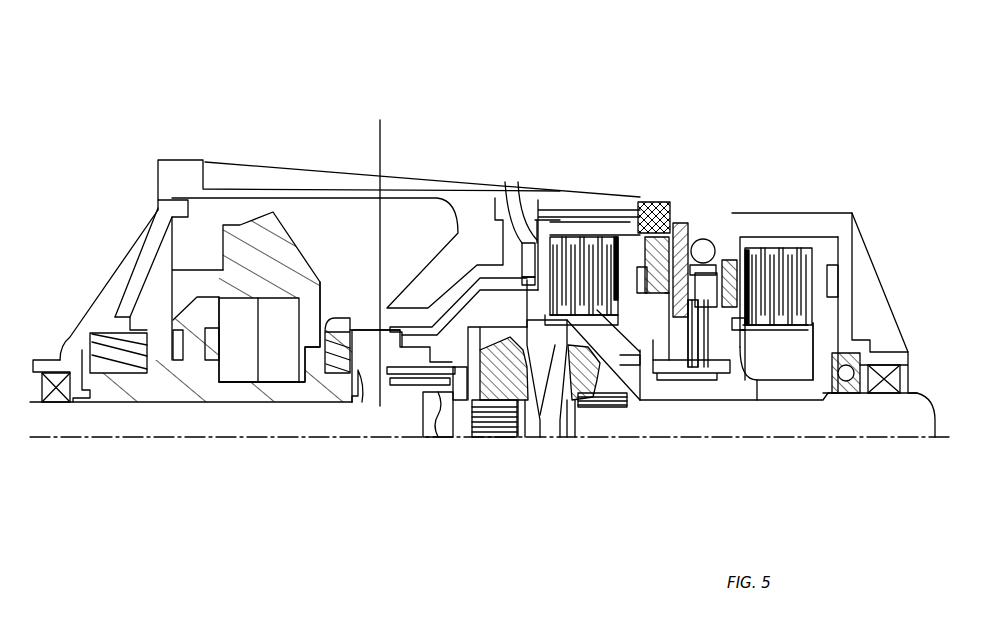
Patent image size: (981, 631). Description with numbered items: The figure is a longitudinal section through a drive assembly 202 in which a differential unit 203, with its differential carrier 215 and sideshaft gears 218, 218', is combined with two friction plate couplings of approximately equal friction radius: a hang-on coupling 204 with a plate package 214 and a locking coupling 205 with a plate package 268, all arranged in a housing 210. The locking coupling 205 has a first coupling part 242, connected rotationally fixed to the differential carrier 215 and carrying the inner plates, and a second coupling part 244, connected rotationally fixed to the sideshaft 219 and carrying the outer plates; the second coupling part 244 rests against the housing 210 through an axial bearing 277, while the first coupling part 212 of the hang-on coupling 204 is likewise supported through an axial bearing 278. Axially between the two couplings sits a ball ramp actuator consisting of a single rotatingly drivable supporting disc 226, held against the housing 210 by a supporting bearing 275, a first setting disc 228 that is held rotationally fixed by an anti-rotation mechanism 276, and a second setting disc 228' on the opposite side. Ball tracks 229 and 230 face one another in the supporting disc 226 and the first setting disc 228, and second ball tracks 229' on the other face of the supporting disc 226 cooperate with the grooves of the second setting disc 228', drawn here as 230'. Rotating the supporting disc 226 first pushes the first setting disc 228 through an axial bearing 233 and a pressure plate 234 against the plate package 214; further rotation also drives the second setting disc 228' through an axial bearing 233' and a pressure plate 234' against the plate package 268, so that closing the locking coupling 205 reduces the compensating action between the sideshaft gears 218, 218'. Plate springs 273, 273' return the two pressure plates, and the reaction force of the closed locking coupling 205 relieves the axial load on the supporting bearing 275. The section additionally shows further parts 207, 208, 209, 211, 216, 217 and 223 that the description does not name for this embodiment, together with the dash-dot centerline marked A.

The drive assembly 202 is at (156, 74).
The differential unit 203 is at (550, 462).
The hang-on coupling 204 is at (581, 215).
The locking coupling 205 is at (805, 222).
The torsional vibration damper 207 is at (280, 232).
The housing 208 is at (227, 393).
The bolts / fastening 209 is at (125, 385).
The housing 210 is at (138, 253).
The seal 211 is at (410, 408).
The first coupling part 212 is at (535, 215).
The plate package 214 is at (594, 235).
The differential carrier 215 is at (595, 400).
The input shaft 216 is at (574, 405).
The bearing 217 is at (535, 407).
The sideshaft gear 218 is at (603, 416).
The sideshaft gear 218' is at (492, 451).
The sideshaft 219 is at (702, 232).
The support plate 223 is at (442, 400).
The supporting disc 226 is at (697, 238).
The first setting disc 228 is at (646, 213).
The second setting disc 228' is at (748, 237).
The first ball tracks 229 is at (674, 367).
The second ball tracks 229' is at (685, 388).
The ball tracks 230 is at (673, 211).
The second actuating piston 230' is at (692, 395).
The axial bearing 233 is at (654, 238).
The axial bearing 233' is at (743, 248).
The pressure plate 234 is at (590, 211).
The pressure plate 234' is at (770, 253).
The first coupling part 242 is at (740, 420).
The second coupling part 244 is at (827, 253).
The plate package 268 is at (802, 250).
The spring mechanism 273 is at (637, 413).
The spring mechanism 273' is at (752, 404).
The supporting bearing 275 is at (725, 240).
The anti-rotation mechanism 276 is at (658, 204).
The axial bearing 277 is at (835, 277).
The axial bearing 278 is at (516, 240).
The axis of rotation A is at (40, 442).